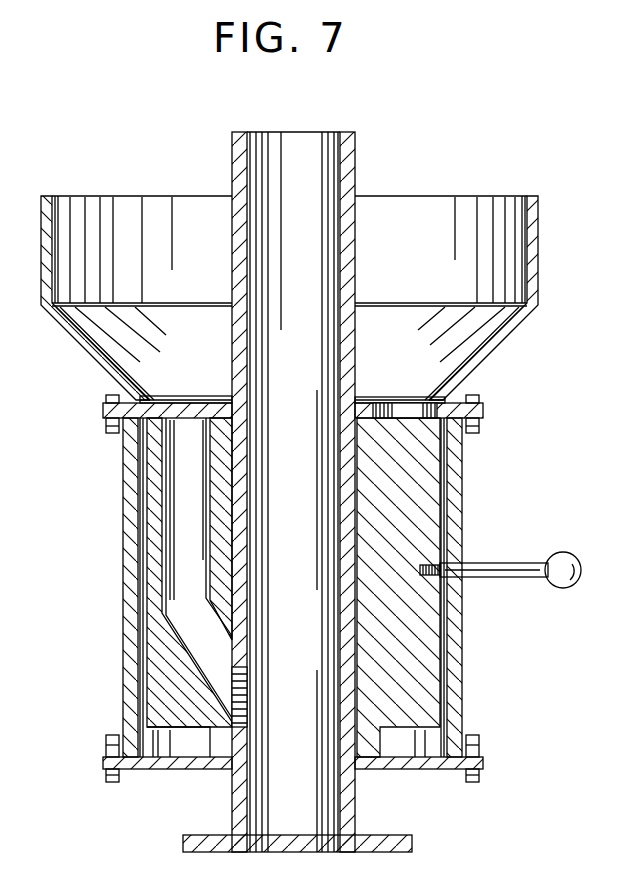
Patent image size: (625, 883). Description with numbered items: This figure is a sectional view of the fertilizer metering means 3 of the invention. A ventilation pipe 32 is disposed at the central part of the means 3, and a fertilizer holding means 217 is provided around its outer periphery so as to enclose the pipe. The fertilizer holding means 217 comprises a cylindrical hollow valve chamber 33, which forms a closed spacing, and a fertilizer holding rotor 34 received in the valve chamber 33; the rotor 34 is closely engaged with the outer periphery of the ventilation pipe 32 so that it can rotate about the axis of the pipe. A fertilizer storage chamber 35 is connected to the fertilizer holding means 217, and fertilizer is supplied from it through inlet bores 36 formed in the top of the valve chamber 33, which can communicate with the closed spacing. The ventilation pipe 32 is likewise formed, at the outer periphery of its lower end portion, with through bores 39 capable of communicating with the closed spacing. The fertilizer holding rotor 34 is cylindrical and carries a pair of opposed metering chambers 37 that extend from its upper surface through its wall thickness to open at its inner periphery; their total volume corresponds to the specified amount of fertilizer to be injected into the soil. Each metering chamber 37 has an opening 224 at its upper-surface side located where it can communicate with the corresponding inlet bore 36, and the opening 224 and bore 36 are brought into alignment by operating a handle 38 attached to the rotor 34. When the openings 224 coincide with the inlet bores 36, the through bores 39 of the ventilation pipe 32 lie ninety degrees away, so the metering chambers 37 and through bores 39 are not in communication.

The fertilizer metering means 3 is at (548, 474).
The ventilation pipe 32 is at (359, 802).
The valve chamber 33 is at (455, 698).
The fertilizer holding rotor 34 is at (430, 648).
The fertilizer storage chamber 35 is at (538, 258).
The inlet bores 36 is at (404, 410).
The metering chambers 37 is at (187, 560).
The handle 38 is at (497, 566).
The through bores 39 is at (231, 705).
The fertilizer holding means 217 is at (110, 522).
The opening 224 is at (187, 406).